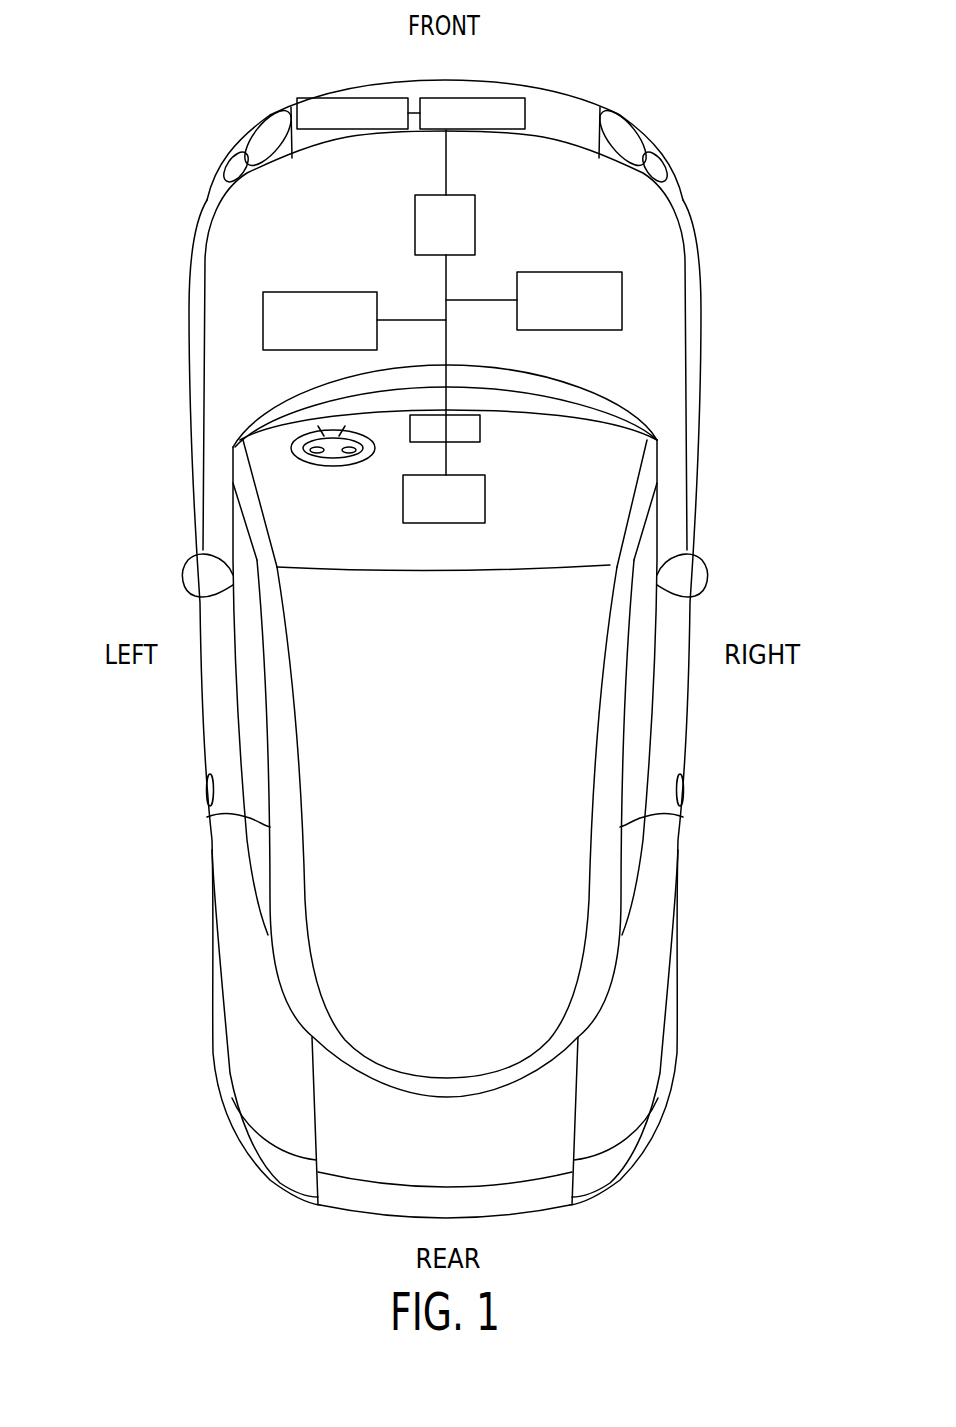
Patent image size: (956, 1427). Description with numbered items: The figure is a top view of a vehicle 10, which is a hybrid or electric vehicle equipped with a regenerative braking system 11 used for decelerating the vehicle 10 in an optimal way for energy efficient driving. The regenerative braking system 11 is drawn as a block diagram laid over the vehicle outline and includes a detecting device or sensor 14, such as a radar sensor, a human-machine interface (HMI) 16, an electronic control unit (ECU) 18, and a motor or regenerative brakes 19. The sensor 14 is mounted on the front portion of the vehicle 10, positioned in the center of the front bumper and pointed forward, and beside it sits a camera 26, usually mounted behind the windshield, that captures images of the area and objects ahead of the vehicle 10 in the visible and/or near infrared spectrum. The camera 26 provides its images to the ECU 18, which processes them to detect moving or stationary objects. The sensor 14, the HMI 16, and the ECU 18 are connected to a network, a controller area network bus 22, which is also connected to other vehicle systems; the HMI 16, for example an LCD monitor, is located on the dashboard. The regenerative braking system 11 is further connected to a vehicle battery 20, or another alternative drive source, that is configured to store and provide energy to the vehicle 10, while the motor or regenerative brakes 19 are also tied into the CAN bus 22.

The vehicle 10 is at (157, 380).
The regenerative braking system 11 is at (353, 262).
The sensor 14 is at (480, 97).
The human-machine interface (HMI) 16 is at (487, 493).
The electronic control unit (ECU) 18 is at (475, 232).
The motor or regenerative brakes 19 is at (600, 272).
The vehicle battery 20 is at (280, 291).
The CAN bus 22 is at (447, 335).
The camera 26 is at (362, 98).